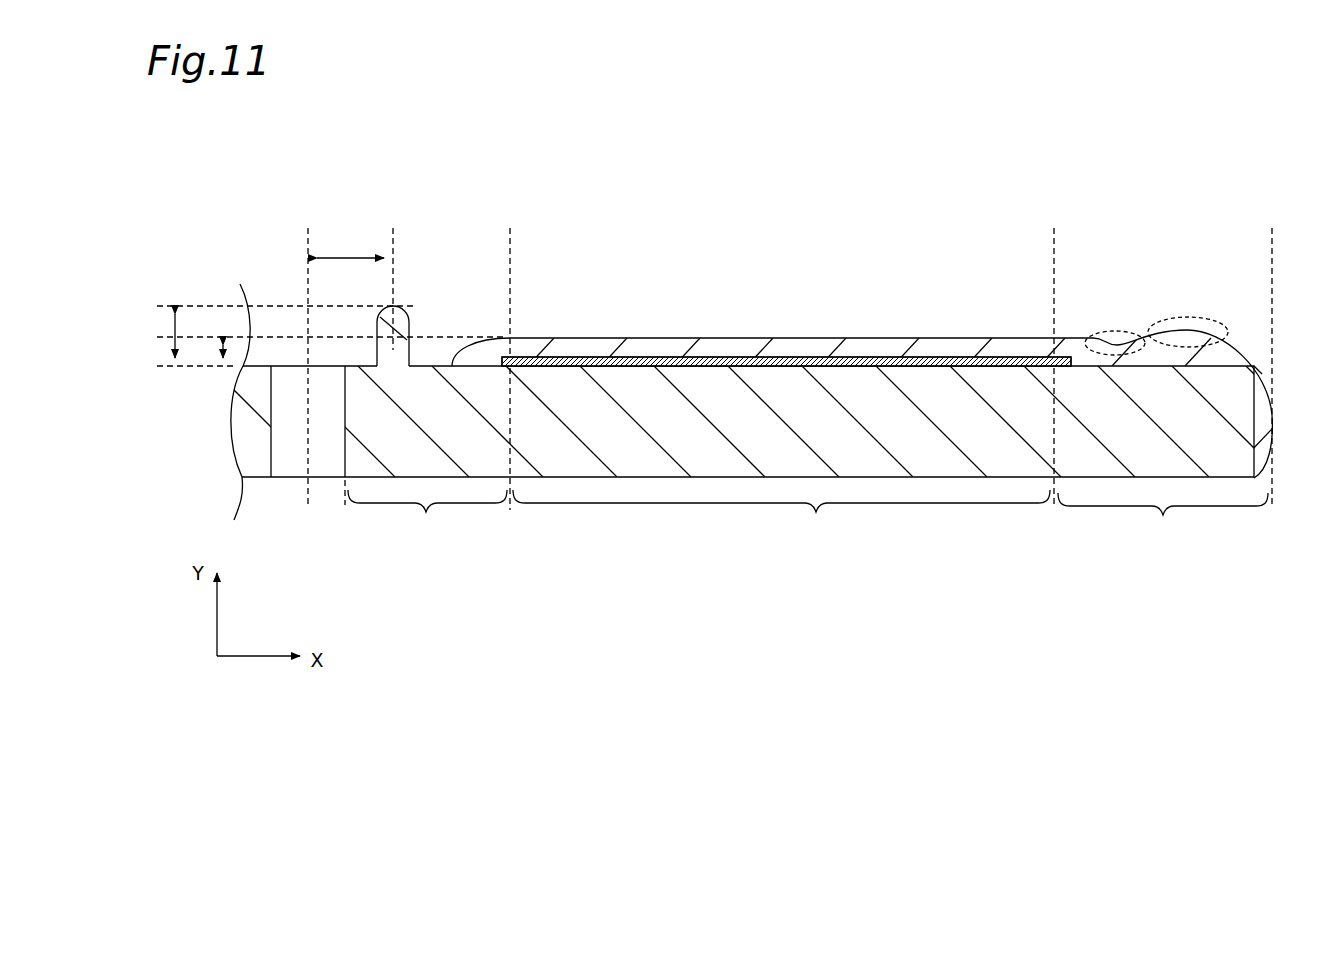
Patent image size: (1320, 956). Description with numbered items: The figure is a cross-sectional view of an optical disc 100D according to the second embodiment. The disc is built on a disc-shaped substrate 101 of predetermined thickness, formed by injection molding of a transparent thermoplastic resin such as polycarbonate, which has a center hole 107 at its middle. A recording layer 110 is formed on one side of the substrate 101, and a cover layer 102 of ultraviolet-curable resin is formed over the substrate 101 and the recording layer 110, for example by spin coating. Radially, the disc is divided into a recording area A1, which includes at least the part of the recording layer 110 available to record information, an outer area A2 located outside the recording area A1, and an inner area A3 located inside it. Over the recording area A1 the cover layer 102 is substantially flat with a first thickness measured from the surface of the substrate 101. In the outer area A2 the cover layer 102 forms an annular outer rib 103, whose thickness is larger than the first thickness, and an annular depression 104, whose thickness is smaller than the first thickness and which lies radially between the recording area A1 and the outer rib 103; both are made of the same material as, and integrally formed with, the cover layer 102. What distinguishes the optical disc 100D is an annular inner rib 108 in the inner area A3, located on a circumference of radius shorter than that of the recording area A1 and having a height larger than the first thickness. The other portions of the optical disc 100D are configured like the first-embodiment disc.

The optical disc 100D is at (690, 145).
The substrate 101 is at (727, 462).
The cover layer 102 is at (667, 352).
The outer rib 103 is at (1187, 318).
The depression 104 is at (1117, 336).
The center hole 107 is at (290, 460).
The inner rib 108 is at (400, 308).
The recording layer 110 is at (588, 355).
The recording area A1 is at (781, 517).
The outer area A2 is at (1163, 519).
The inner area A3 is at (427, 515).